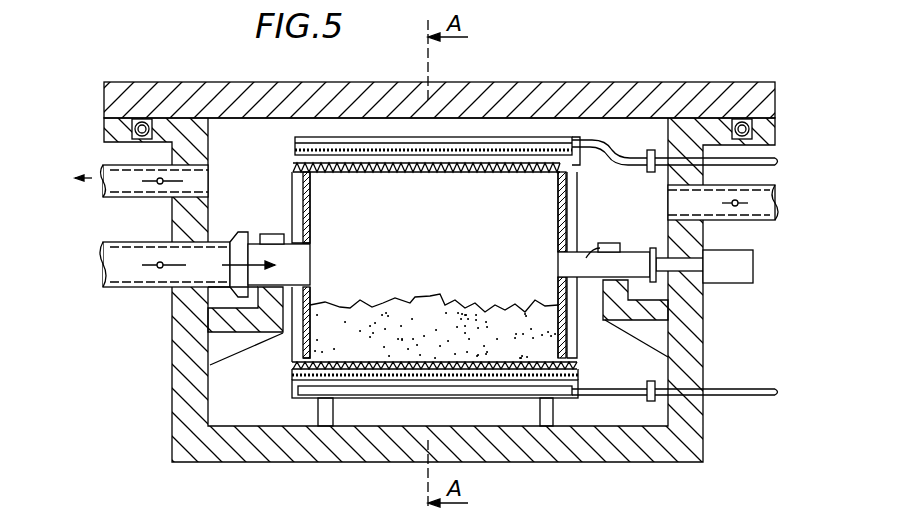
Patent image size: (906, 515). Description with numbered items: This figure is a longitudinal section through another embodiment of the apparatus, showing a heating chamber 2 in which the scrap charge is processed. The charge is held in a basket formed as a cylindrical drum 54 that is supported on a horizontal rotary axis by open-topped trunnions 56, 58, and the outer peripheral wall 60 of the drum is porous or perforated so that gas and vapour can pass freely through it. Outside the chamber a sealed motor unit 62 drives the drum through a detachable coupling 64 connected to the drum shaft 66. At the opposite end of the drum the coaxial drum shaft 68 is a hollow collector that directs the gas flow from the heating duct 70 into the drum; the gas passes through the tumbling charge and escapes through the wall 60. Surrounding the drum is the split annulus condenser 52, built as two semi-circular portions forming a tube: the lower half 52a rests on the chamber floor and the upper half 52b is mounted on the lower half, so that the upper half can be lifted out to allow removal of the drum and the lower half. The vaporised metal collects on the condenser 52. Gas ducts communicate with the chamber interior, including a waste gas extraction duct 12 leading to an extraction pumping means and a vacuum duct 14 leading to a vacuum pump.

The heating chamber 2 is at (210, 379).
The waste gas extraction duct 12 is at (123, 187).
The vacuum duct 14 is at (769, 214).
The condenser 52 is at (462, 130).
The lower half of condenser 52a is at (497, 400).
The upper half of condenser 52b is at (513, 143).
The cylindrical drum 54 is at (322, 368).
The open-topped trunnion 56 is at (238, 325).
The open-topped trunnion 58 is at (668, 318).
The outer peripheral wall 60 is at (332, 163).
The sealed motor unit 62 is at (752, 268).
The detachable coupling 64 is at (668, 284).
The drum shaft 66 is at (640, 262).
The coaxial drum shaft 68 is at (263, 233).
The heating duct 70 is at (156, 288).